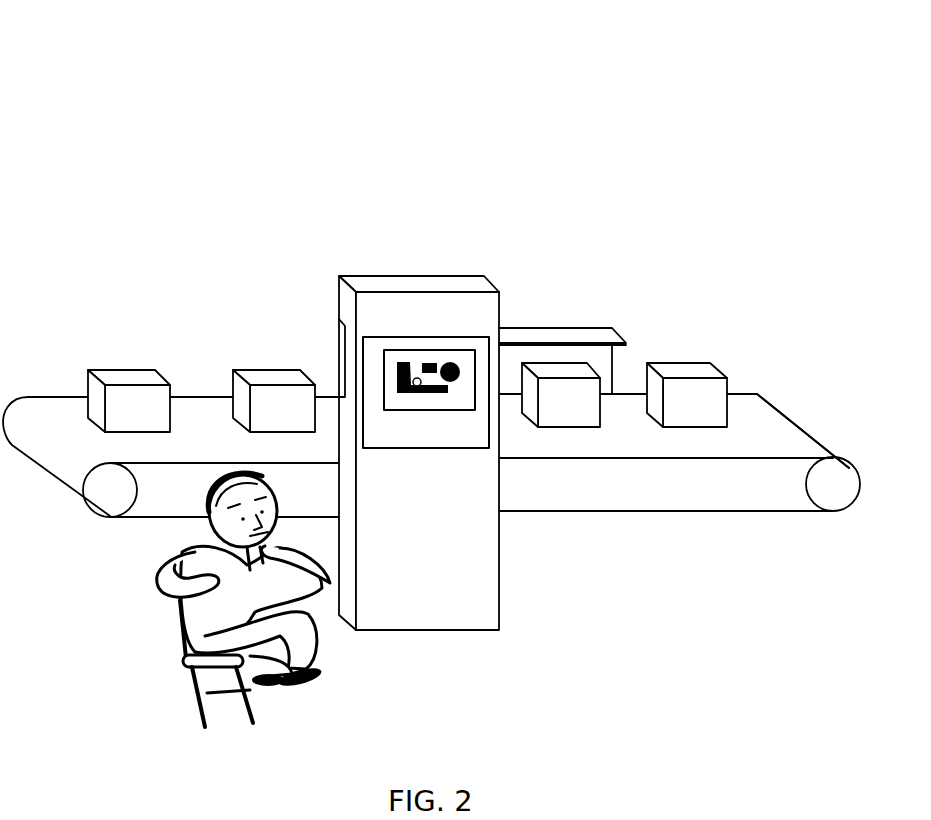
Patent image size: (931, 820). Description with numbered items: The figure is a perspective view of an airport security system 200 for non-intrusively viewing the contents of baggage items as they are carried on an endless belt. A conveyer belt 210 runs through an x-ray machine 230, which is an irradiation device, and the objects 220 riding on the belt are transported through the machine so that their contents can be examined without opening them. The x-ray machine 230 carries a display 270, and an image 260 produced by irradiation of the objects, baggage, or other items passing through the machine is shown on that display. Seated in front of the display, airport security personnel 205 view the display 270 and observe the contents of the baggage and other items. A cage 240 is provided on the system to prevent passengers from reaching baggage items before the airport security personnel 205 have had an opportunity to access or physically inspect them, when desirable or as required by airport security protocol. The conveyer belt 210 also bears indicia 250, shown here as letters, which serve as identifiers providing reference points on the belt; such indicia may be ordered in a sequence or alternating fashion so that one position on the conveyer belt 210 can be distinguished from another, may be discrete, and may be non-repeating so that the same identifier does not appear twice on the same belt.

The airport security system 200 is at (205, 110).
The airport security personnel 205 is at (157, 583).
The conveyer belt 210 is at (202, 410).
The objects 220 is at (292, 368).
The x-ray machine 230 is at (449, 399).
The cage 240 is at (570, 337).
The indicia 250 is at (728, 445).
The image 260 is at (402, 395).
The display 270 is at (458, 440).